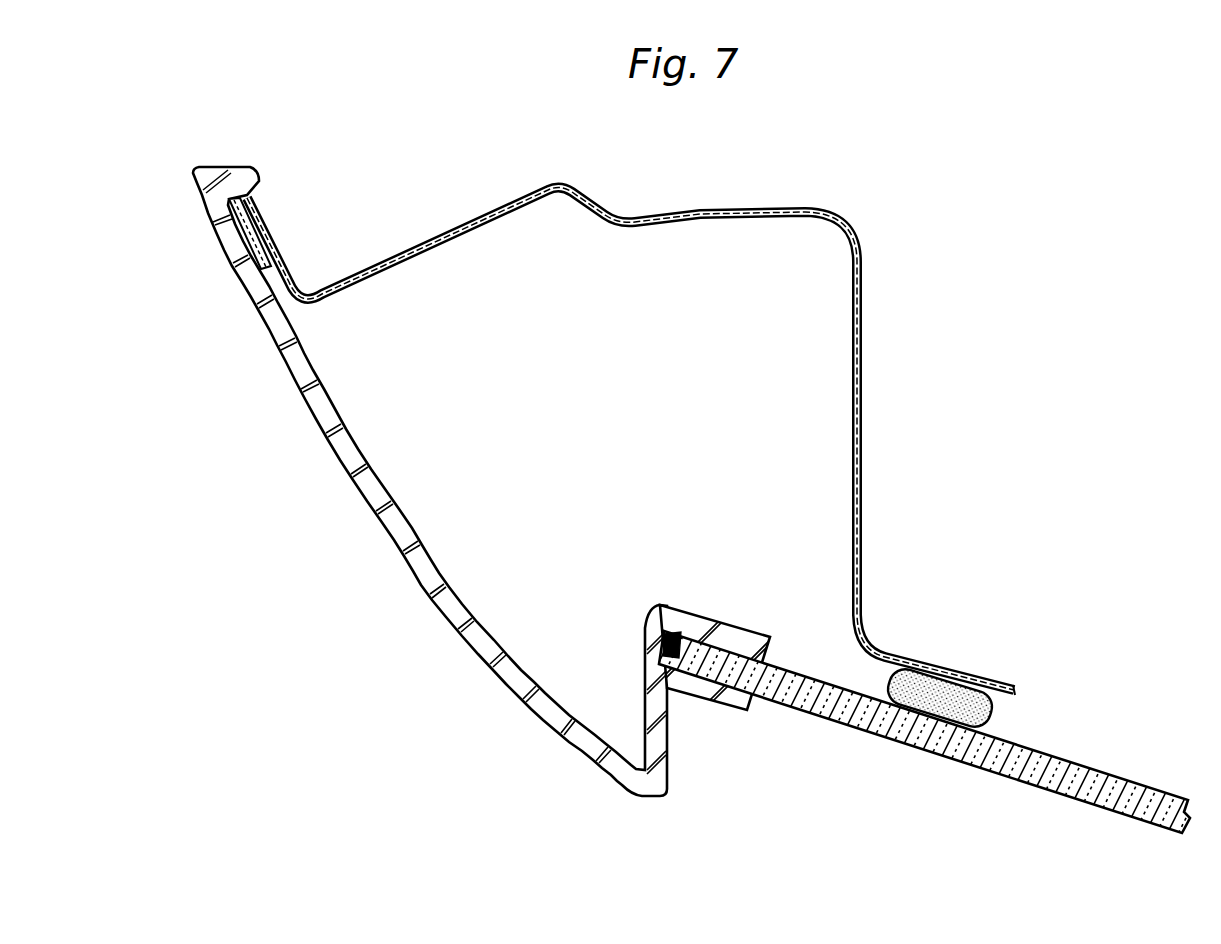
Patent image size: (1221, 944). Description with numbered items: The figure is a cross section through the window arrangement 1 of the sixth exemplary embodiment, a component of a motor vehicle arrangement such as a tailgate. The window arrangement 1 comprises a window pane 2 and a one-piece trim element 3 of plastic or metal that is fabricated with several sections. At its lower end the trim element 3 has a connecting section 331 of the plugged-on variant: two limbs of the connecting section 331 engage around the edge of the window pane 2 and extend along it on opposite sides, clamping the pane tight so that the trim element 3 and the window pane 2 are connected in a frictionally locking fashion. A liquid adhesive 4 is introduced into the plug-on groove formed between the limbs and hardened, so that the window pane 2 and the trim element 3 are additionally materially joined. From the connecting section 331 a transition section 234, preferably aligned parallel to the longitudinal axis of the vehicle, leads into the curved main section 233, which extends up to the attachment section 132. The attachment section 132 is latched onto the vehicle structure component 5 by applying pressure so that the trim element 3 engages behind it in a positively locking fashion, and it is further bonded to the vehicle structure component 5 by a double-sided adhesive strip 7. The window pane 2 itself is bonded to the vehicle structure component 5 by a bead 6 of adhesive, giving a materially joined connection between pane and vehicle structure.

The window arrangement 1 is at (955, 196).
The window pane 2 is at (978, 760).
The trim element 3 is at (403, 613).
The liquid adhesive 4 is at (674, 628).
The vehicle structure component 5 is at (726, 208).
The bead of adhesive 6 is at (997, 712).
The double-sided adhesive strip 7 is at (263, 225).
The attachment section 132 is at (212, 167).
The main section 233 is at (352, 482).
The transition section 234 is at (668, 740).
The connecting section 331 is at (757, 632).